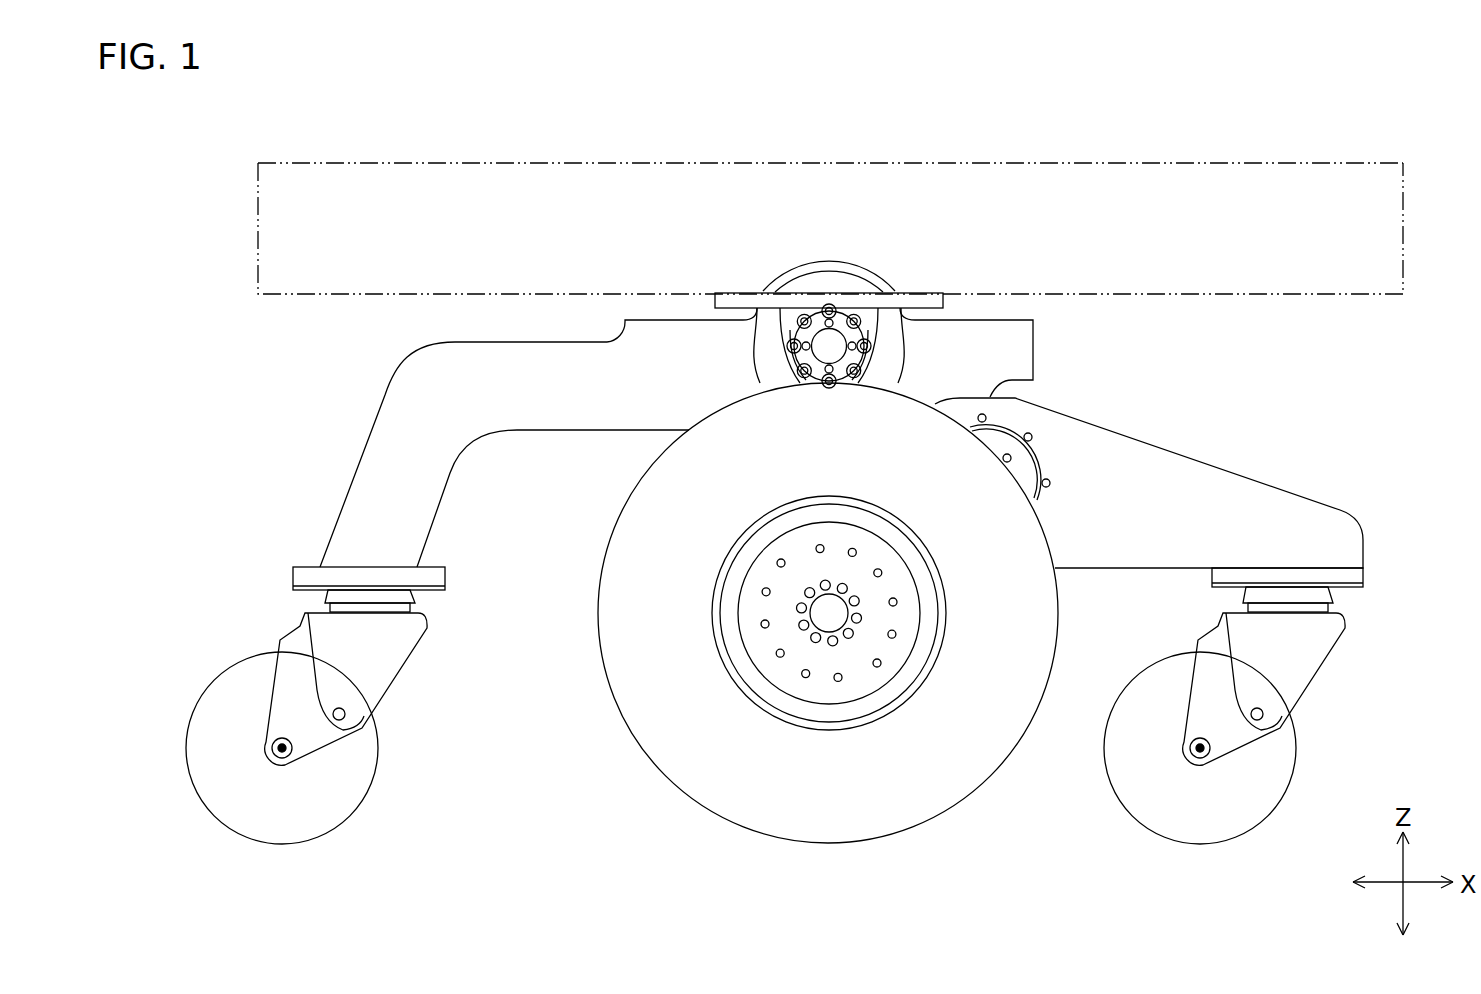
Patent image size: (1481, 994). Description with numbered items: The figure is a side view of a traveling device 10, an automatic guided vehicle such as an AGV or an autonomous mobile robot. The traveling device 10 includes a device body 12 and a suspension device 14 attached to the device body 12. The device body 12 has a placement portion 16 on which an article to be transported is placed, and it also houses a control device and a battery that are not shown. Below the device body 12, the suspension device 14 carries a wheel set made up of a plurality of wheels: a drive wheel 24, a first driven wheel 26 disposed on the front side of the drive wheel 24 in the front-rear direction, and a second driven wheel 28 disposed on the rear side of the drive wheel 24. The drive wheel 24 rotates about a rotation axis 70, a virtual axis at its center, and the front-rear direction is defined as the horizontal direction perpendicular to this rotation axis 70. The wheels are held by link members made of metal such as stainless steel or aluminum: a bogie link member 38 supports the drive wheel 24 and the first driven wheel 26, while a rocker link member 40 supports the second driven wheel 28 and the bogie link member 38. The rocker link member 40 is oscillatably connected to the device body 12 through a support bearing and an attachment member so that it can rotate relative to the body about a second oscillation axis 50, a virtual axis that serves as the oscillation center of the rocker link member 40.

The traveling device 10 is at (224, 156).
The device body 12 is at (258, 229).
The suspension device 14 is at (274, 413).
The placement portion 16 is at (1065, 162).
The drive wheel 24 is at (760, 846).
The first driven wheel 26 is at (1222, 843).
The second driven wheel 28 is at (240, 842).
The bogie link member 38 is at (1182, 448).
The rocker link member 40 is at (380, 408).
The second oscillation axis 50 is at (829, 347).
The rotation axis 70 is at (829, 613).